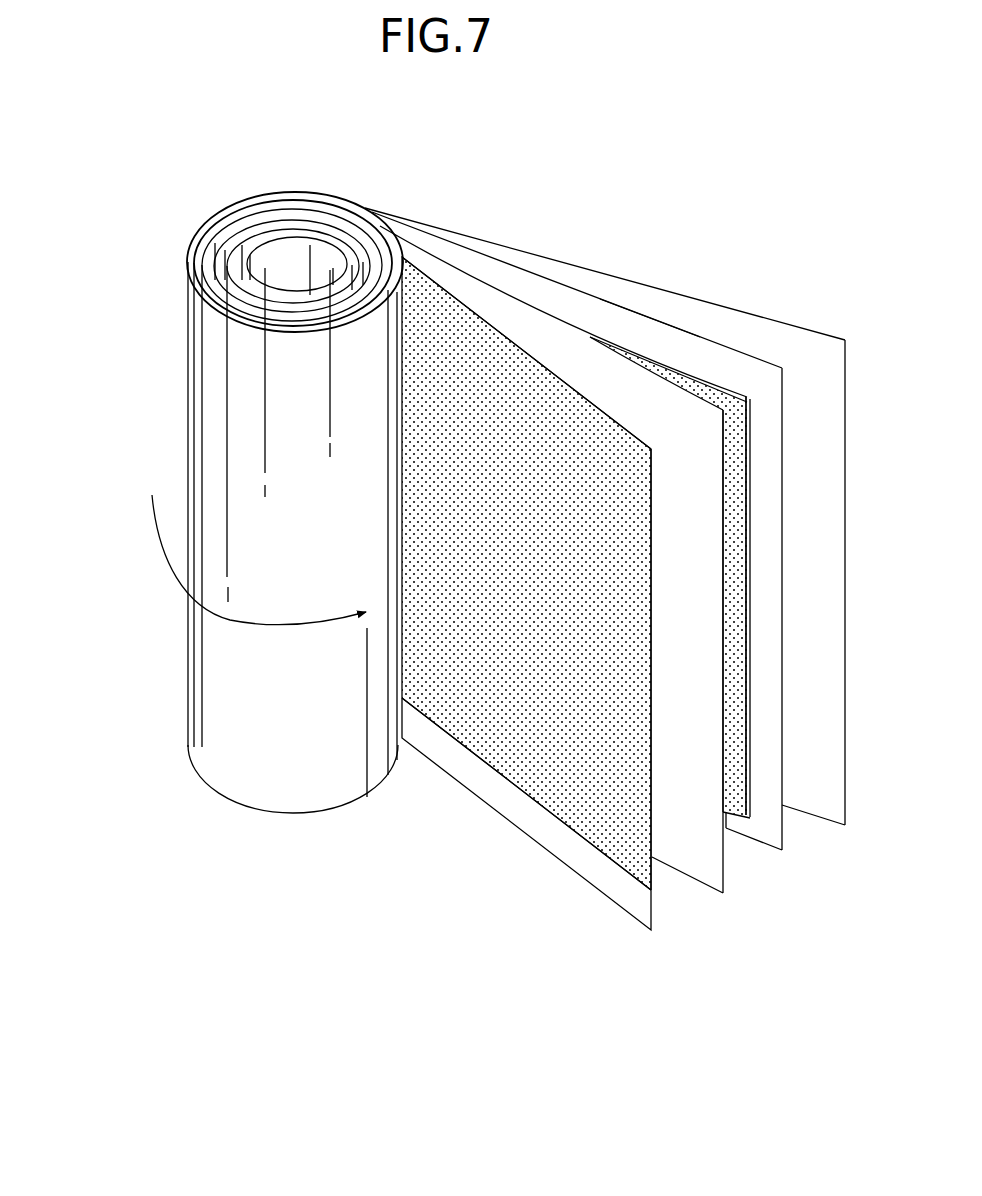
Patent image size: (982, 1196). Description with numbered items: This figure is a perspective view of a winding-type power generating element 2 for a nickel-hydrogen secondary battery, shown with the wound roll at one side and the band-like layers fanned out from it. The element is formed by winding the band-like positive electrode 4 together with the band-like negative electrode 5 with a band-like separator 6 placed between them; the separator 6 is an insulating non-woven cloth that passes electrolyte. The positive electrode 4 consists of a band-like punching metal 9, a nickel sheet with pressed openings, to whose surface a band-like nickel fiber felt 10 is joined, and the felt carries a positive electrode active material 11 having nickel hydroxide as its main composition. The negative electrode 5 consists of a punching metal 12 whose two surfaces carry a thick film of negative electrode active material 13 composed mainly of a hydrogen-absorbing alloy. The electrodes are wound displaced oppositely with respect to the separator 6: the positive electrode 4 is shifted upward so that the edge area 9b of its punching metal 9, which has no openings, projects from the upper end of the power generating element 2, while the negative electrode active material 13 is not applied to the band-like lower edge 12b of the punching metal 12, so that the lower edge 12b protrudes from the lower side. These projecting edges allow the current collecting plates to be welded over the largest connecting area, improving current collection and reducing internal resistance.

The power generating element 2 is at (152, 256).
The positive electrode 4 is at (607, 573).
The negative electrode 5 is at (558, 621).
The separator 6 is at (695, 855).
The punching metal 9 is at (765, 372).
The edge area 9b is at (670, 340).
The nickel fiber felt 10 is at (738, 503).
The positive electrode active material 11 is at (794, 606).
The punching metal 12 is at (526, 593).
The lower edge 12b is at (494, 795).
The negative electrode active material 13 is at (630, 703).